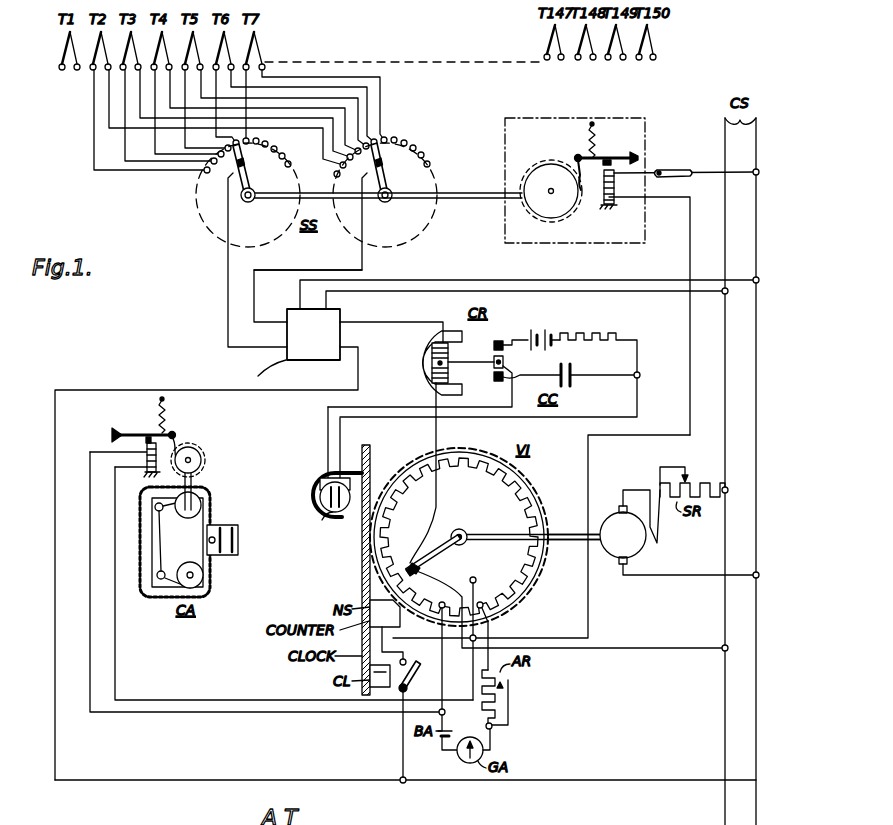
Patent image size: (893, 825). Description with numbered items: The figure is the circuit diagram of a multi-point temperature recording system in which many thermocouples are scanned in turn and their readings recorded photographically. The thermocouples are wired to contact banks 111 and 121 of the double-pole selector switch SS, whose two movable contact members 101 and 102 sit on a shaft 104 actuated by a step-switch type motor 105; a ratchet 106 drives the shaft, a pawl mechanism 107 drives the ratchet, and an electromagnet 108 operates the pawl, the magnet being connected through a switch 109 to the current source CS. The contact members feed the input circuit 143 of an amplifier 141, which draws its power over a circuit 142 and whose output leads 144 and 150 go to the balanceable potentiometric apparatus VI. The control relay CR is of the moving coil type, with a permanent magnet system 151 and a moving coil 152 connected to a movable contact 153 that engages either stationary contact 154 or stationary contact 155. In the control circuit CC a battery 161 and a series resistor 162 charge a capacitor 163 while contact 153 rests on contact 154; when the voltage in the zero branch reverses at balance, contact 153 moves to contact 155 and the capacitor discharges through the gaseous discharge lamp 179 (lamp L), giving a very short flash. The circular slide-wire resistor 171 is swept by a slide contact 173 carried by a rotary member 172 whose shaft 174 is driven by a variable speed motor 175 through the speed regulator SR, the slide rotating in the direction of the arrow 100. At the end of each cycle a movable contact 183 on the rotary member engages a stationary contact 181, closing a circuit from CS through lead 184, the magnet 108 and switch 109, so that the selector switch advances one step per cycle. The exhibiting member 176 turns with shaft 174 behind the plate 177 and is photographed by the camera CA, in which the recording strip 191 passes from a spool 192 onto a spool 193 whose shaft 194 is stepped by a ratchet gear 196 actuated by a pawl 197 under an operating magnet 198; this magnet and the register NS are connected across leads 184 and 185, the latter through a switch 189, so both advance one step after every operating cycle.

The arrow 100 is at (470, 524).
The movable contact member 101 is at (248, 170).
The movable contact member 102 is at (387, 170).
The shaft 104 is at (293, 200).
The motor 105 is at (540, 116).
The ratchet 106 is at (548, 218).
The pawl mechanism 107 is at (596, 156).
The electromagnet 108 is at (605, 206).
The switch 109 is at (668, 170).
The contact bank 111 is at (205, 172).
The contact bank 121 is at (334, 175).
The amplifier 141 is at (285, 336).
The circuit 142 is at (466, 280).
The input circuit 143 is at (248, 270).
The output lead 144 is at (54, 546).
The output lead 150 is at (374, 324).
The permanent magnet system 151 is at (400, 384).
The moving coil 152 is at (434, 364).
The movable contact 153 is at (494, 368).
The stationary contact 154 is at (500, 339).
The stationary contact 155 is at (504, 382).
The battery 161 is at (546, 334).
The series resistor 162 is at (584, 334).
The capacitor 163 is at (577, 382).
The resistor 171 is at (505, 486).
The rotary member 172 is at (437, 522).
The slide contact 173 is at (412, 576).
The shaft 174 is at (596, 532).
The motor 175 is at (632, 550).
The exhibiting member 176 is at (530, 486).
The plate 177 is at (371, 458).
The lamp 179 is at (312, 489).
The stationary contact 181 is at (475, 579).
The movable contact 183 is at (437, 558).
The lead 184 is at (690, 389).
The lead 185 is at (590, 776).
The switch 189 is at (410, 682).
The recording strip 191 is at (155, 546).
The spool 192 is at (205, 576).
The spool 193 is at (204, 505).
The shaft 194 is at (194, 488).
The ratchet gear 196 is at (198, 449).
The pawl 197 is at (175, 432).
The operating magnet 198 is at (148, 474).